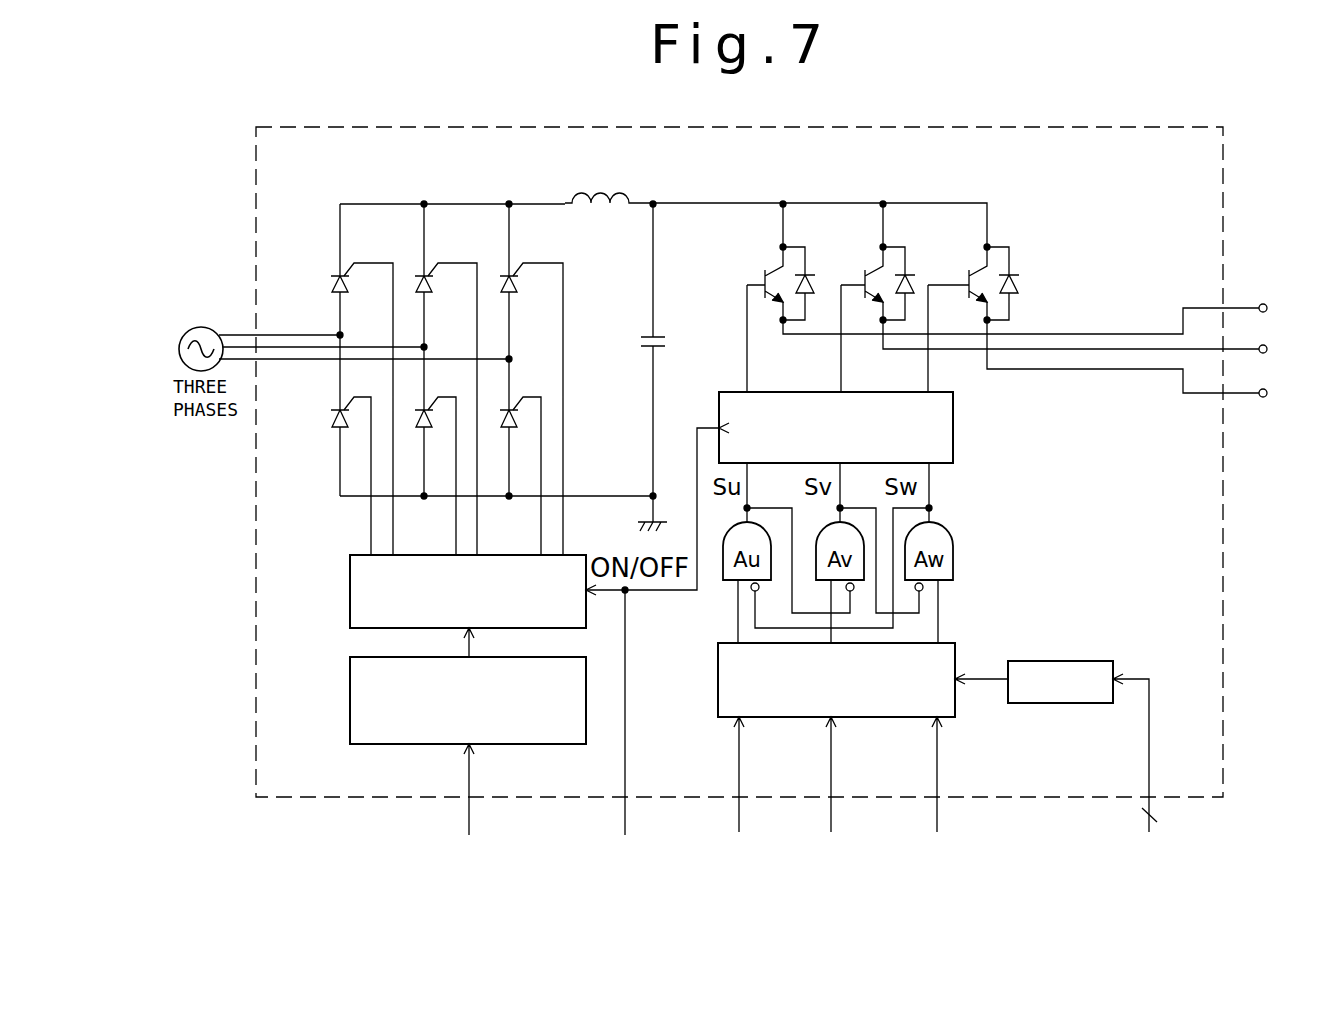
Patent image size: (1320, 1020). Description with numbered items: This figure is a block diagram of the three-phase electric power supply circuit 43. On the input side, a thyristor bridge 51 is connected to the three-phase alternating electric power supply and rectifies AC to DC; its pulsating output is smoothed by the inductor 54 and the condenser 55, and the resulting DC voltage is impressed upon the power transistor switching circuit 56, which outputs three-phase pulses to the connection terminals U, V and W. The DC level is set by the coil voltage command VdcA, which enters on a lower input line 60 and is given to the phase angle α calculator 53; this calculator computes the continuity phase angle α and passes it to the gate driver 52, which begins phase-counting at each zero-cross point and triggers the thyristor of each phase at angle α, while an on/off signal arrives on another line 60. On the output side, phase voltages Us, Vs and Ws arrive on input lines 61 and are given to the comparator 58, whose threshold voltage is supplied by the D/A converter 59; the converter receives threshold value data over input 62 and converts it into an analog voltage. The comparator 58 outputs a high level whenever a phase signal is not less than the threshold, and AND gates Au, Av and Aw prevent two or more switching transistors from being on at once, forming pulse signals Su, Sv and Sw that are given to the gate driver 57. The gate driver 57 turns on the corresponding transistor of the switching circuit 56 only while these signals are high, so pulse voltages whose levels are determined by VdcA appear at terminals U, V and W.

The three-phase electric power supply circuit 43 is at (742, 126).
The thyristor bridge 51 is at (329, 262).
The gate driver 52 is at (350, 573).
The phase angle α calculator 53 is at (350, 681).
The inductor 54 is at (603, 190).
The condenser 55 is at (648, 333).
The power transistor switching circuit 56 is at (1003, 220).
The gate driver 57 is at (955, 428).
The comparator 58 is at (957, 651).
The D/A converter 59 is at (1083, 661).
The command input signal 60 is at (470, 807).
The current detection signal 61 is at (827, 793).
The digital current command input 62 is at (1131, 866).